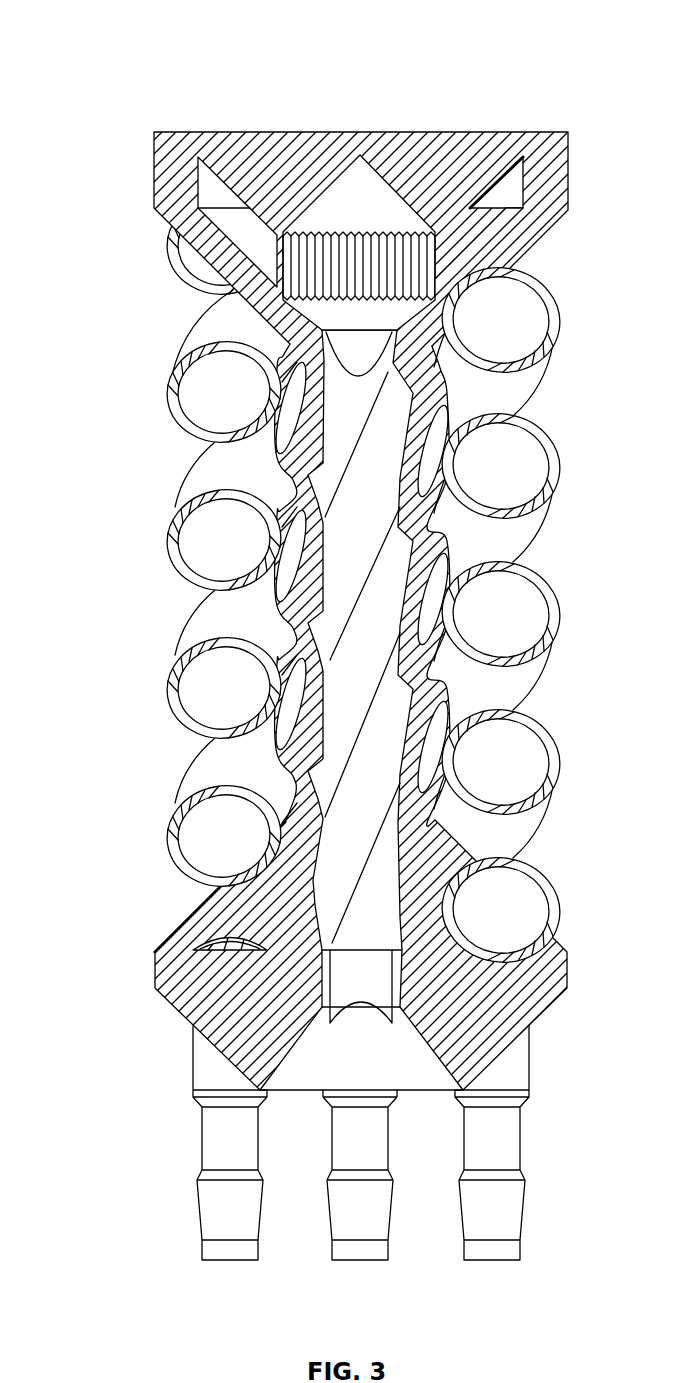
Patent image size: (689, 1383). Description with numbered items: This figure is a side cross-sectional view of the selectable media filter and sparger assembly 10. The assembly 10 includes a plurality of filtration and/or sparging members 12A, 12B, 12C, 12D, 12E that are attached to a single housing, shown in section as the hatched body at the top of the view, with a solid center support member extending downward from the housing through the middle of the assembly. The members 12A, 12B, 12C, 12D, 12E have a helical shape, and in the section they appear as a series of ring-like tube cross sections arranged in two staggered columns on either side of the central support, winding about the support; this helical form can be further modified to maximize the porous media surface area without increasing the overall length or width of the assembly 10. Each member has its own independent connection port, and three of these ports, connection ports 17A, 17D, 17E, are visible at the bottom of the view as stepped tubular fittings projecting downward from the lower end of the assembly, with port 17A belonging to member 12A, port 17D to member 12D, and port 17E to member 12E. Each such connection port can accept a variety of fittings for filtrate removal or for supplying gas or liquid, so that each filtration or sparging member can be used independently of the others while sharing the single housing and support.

The selectable media filter and sparger assembly 10 is at (116, 38).
The filtration and/or sparging member 12A is at (175, 803).
The filtration and/or sparging member 12B is at (182, 236).
The filtration and/or sparging member 12C is at (188, 357).
The filtration and/or sparging member 12D is at (175, 507).
The filtration and/or sparging member 12E is at (175, 655).
The connection port 17A is at (215, 1262).
The connection port 17D is at (477, 1262).
The connection port 17E is at (345, 1262).